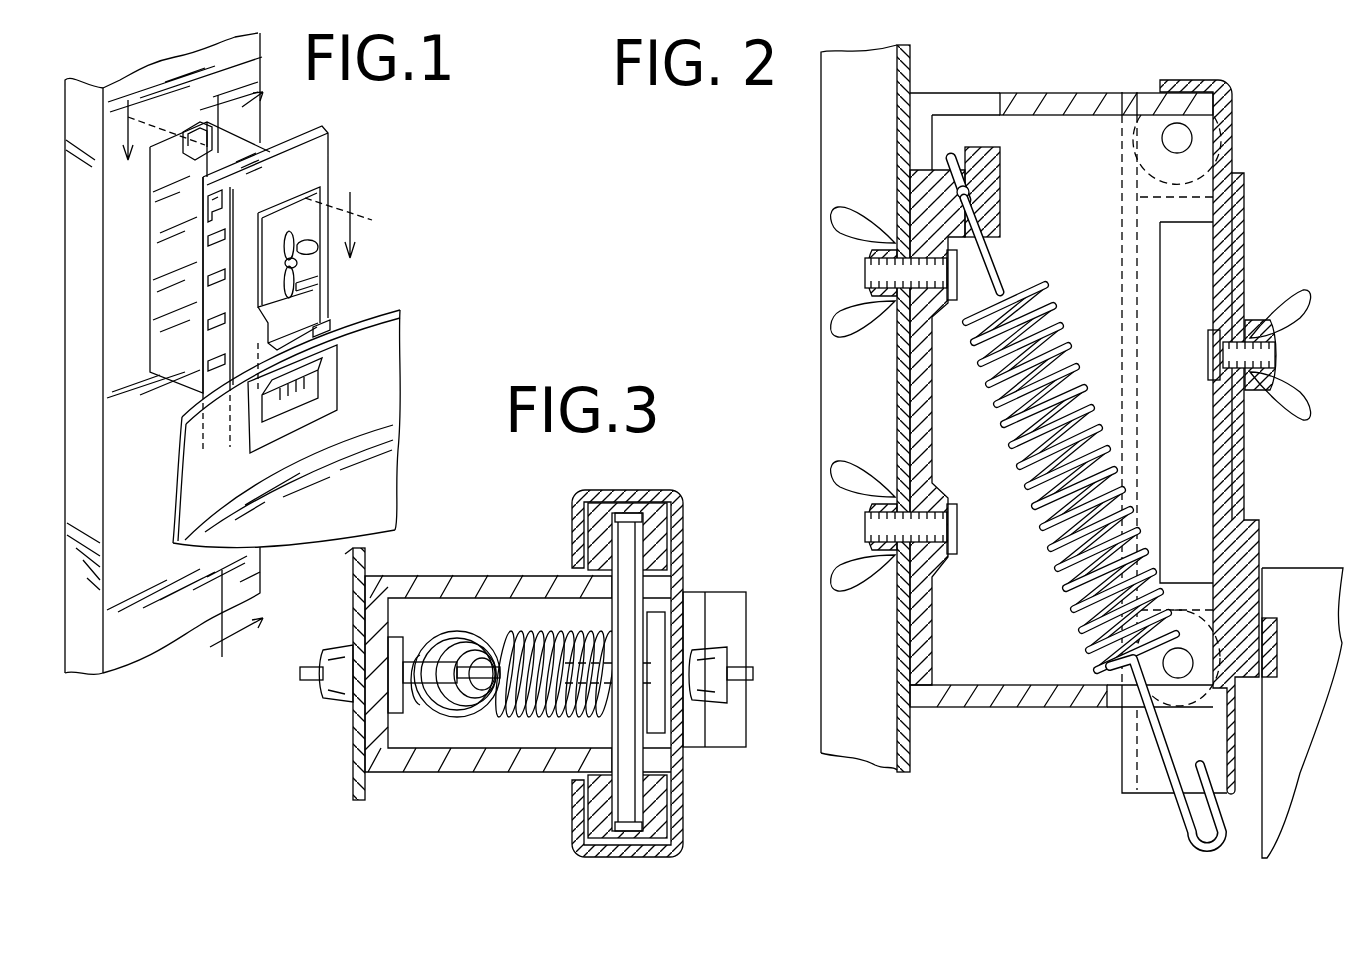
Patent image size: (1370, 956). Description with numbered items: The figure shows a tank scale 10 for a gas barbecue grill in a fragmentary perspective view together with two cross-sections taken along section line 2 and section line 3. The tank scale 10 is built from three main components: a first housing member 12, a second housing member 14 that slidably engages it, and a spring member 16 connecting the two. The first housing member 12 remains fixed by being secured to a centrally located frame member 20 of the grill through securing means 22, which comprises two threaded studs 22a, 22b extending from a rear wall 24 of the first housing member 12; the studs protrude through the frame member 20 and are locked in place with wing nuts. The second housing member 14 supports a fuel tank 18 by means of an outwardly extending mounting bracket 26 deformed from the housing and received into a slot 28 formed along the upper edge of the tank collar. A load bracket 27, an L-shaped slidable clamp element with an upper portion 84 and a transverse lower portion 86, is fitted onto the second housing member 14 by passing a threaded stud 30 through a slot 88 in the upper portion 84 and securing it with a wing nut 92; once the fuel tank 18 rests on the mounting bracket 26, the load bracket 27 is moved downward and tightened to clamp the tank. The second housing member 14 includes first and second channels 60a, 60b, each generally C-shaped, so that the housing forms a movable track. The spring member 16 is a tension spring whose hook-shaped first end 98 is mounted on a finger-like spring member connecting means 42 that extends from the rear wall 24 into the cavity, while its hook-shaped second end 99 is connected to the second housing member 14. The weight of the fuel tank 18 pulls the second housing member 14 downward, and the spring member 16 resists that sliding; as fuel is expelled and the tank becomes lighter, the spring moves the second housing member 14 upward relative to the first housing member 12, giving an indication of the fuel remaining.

In FIG. 1, the section line 2— 2 is at (241, 385).
In FIG. 1, the section line 3— 3 is at (238, 179).
In FIG. 1, the tank scale 10 is at (307, 278).
In FIG. 1, the first housing member 12 is at (167, 276).
In FIG. 3, the first housing member 12 is at (402, 773).
In FIG. 2, the first housing member 12 is at (1057, 93).
In FIG. 1, the second housing member 14 is at (322, 278).
In FIG. 3, the second housing member 14 is at (639, 650).
In FIG. 2, the second housing member 14 is at (1237, 437).
In FIG. 3, the spring member 16 is at (520, 713).
In FIG. 2, the spring member 16 is at (1060, 578).
In FIG. 1, the fuel tank 18 is at (400, 348).
In FIG. 2, the fuel tank 18 is at (1334, 676).
In FIG. 1, the frame member 20 is at (77, 443).
In FIG. 3, the frame member 20 is at (352, 790).
In FIG. 2, the frame member 20 is at (862, 760).
In FIG. 3, the means for securing the tank scale 22 is at (300, 672).
In FIG. 2, the threaded stud 22a is at (865, 273).
In FIG. 2, the threaded stud 22b is at (865, 527).
In FIG. 2, the rear wall 24 is at (918, 195).
In FIG. 2, the mounting bracket 26 is at (1277, 665).
In FIG. 1, the load bracket 27 is at (313, 300).
In FIG. 2, the load bracket 27 is at (1246, 230).
In FIG. 1, the slot 28 is at (337, 397).
In FIG. 2, the threaded stud 30 is at (1276, 355).
In FIG. 2, the spring member connecting means 42 is at (1000, 165).
In FIG. 3, the first channel 60a is at (592, 857).
In FIG. 3, the second channel 60b is at (624, 491).
In FIG. 1, the upper portion 84 is at (290, 228).
In FIG. 1, the transverse lower portion 86 is at (330, 328).
In FIG. 1, the slot 88 is at (283, 243).
In FIG. 1, the wing nut 92 is at (318, 287).
In FIG. 2, the first end 98 is at (998, 268).
In FIG. 2, the second end 99 is at (1182, 832).